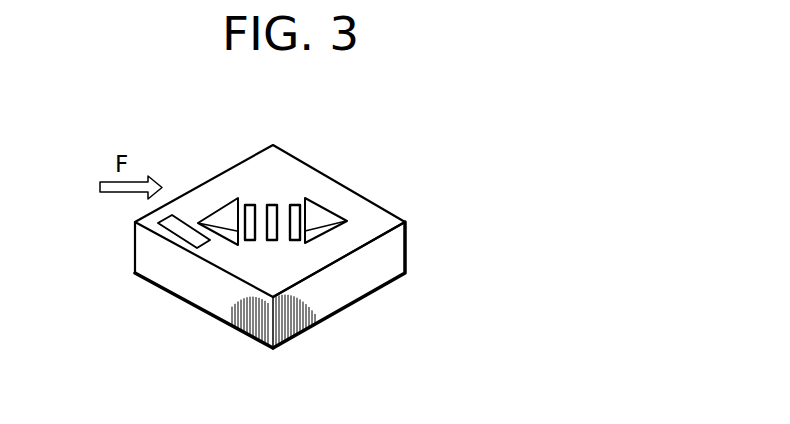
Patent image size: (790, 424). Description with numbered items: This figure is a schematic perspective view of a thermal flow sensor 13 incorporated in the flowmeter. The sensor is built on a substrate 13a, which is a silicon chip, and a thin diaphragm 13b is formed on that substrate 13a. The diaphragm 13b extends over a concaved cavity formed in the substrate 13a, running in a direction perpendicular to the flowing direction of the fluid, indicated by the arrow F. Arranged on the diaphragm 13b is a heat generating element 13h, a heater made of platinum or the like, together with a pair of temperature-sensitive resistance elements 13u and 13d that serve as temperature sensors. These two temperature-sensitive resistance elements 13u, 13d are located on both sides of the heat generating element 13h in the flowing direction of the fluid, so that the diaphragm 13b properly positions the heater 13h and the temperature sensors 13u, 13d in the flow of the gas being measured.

The thermal flow sensor 13 is at (310, 238).
The substrate 13a is at (400, 257).
The diaphragm 13b is at (283, 232).
The temperature-sensitive resistance element 13u is at (250, 205).
The heat generating element 13h is at (270, 205).
The temperature-sensitive resistance element 13d is at (295, 205).